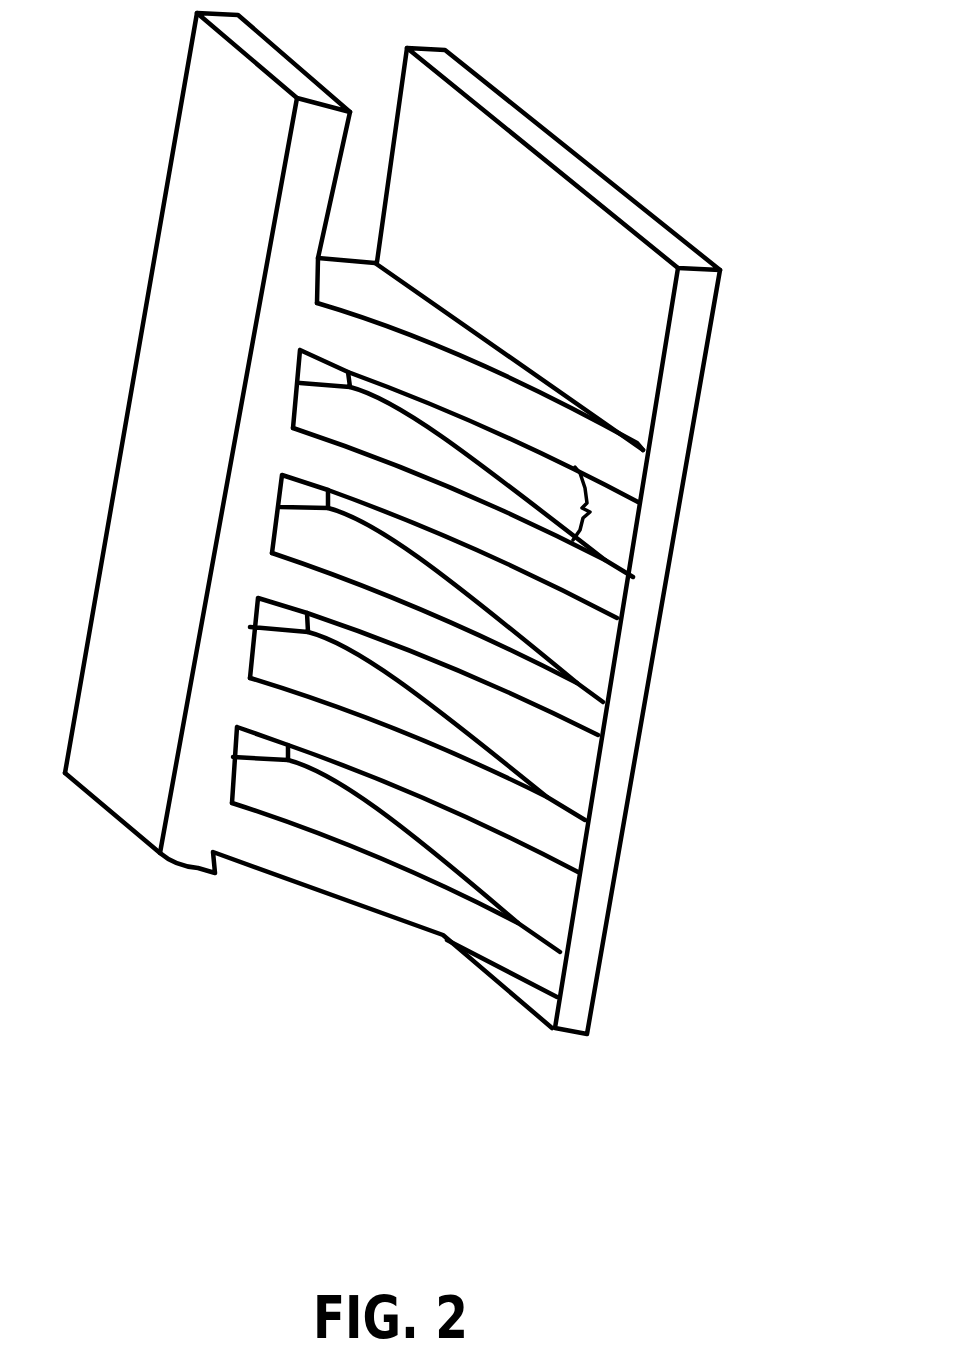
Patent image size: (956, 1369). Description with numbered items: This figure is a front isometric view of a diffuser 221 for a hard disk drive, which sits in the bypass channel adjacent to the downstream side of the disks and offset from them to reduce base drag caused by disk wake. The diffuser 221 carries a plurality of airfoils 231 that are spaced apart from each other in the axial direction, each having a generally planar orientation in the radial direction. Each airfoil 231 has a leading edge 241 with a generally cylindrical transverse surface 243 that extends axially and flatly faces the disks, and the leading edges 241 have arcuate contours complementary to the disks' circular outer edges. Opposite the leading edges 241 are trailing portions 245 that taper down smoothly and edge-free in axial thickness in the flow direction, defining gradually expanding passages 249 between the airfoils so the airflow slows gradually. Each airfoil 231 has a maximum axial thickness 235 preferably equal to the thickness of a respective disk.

The diffuser 221 is at (667, 133).
The airfoils 231 is at (420, 315).
The leading edge 241 is at (483, 367).
The transverse surface 243 is at (543, 425).
The trailing portions 245 is at (343, 258).
The gradually expanding passages 249 is at (590, 512).
The maximum axial thickness 235 is at (588, 637).